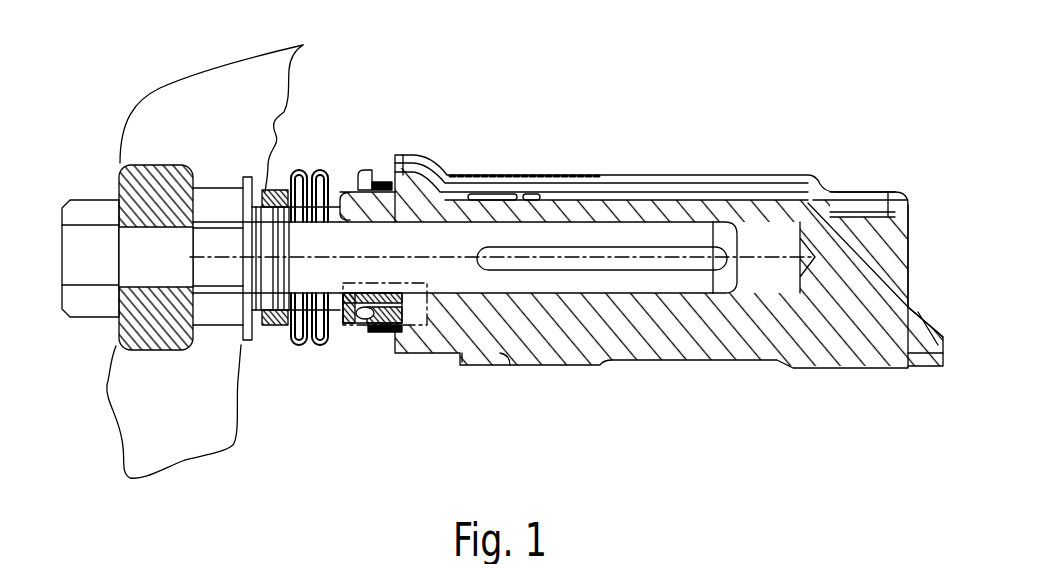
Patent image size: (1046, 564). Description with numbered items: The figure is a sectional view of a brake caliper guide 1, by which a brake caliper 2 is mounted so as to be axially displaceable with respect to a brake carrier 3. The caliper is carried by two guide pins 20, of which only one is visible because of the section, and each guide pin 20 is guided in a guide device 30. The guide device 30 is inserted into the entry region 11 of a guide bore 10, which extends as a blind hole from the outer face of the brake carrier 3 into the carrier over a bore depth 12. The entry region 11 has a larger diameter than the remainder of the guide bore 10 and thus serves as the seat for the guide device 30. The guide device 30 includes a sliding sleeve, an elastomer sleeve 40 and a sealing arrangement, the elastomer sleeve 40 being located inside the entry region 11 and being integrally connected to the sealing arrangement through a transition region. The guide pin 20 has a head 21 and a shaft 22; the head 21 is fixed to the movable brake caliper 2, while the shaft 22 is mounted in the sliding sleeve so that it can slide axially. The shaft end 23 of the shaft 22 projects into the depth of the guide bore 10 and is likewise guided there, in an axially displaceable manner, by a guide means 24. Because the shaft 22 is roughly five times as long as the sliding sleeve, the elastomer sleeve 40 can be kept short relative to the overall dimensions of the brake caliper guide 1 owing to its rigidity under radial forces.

The brake caliper guide 1 is at (620, 104).
The brake caliper 2 is at (165, 428).
The brake carrier 3 is at (857, 240).
The guide bore 10 is at (573, 320).
The entry region 11 is at (367, 357).
The bore depth 12 is at (760, 240).
The guide pin 20 is at (448, 207).
The guide pin head 21 is at (213, 247).
The shaft 22 is at (470, 243).
The shaft end 23 is at (658, 283).
The guide means 24 is at (677, 250).
The guide device 30 is at (368, 152).
The elastomer sleeve 40 is at (402, 333).